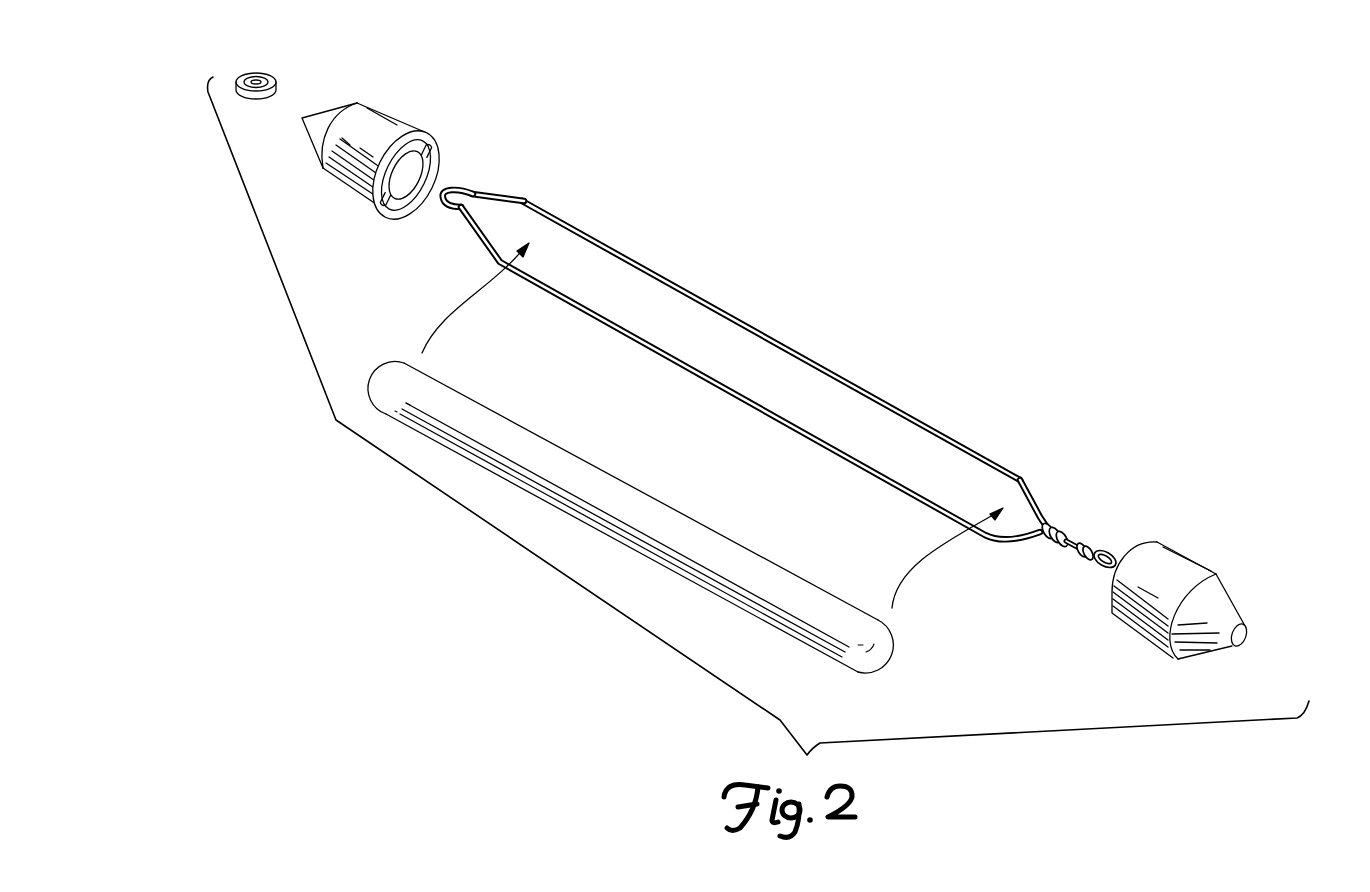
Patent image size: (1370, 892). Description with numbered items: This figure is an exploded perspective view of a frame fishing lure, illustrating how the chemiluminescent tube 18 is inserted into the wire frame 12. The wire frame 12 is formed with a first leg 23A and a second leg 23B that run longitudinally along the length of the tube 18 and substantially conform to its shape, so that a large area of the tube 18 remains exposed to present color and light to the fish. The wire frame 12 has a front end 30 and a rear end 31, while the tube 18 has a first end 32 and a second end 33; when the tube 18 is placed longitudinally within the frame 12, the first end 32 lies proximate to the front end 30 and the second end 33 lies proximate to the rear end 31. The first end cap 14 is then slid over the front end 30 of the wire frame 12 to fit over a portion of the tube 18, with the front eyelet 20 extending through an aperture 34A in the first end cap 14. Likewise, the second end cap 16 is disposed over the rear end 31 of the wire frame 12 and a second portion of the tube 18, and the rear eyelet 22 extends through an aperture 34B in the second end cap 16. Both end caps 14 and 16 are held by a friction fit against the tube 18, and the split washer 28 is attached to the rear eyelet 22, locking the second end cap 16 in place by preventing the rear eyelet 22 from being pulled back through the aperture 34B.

The wire frame 12 is at (805, 345).
The first end cap 14 is at (1222, 595).
The second end cap 16 is at (355, 150).
The chemiluminescent tube 18 is at (655, 495).
The front eyelet 20 is at (1108, 552).
The rear eyelet 22 is at (466, 187).
The first leg 23A is at (823, 363).
The second leg 23B is at (787, 426).
The split washer 28 is at (268, 82).
The front end 30 is at (1021, 481).
The rear end 31 is at (514, 198).
The first end 32 is at (882, 643).
The second end 33 is at (398, 378).
The aperture 34A is at (1247, 629).
The aperture 34B is at (304, 117).